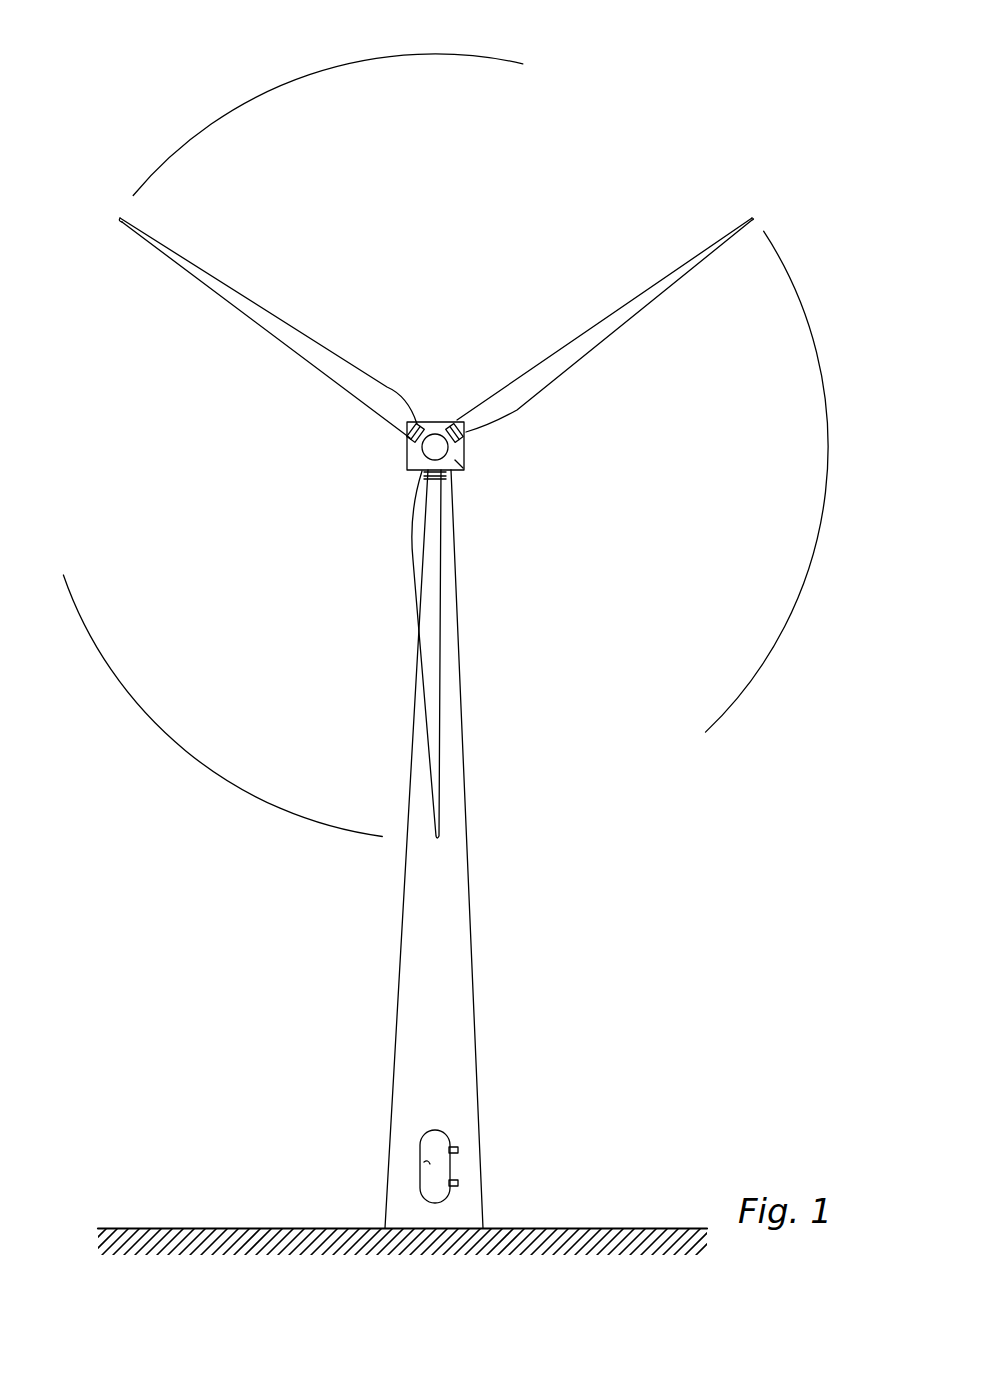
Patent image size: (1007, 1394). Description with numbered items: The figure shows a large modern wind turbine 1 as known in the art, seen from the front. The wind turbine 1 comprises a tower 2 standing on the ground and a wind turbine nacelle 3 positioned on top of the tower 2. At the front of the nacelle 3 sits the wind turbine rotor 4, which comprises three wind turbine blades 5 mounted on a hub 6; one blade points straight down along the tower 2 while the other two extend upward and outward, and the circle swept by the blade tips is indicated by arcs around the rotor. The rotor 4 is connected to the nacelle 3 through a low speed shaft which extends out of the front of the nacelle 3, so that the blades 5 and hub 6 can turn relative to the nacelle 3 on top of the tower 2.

The wind turbine 1 is at (780, 152).
The tower 2 is at (462, 931).
The wind turbine nacelle 3 is at (460, 462).
The wind turbine rotor 4 is at (412, 432).
The wind turbine blades 5 is at (272, 322).
The hub 6 is at (435, 445).